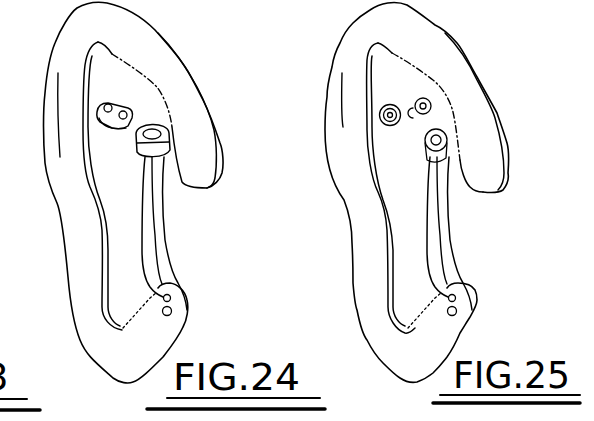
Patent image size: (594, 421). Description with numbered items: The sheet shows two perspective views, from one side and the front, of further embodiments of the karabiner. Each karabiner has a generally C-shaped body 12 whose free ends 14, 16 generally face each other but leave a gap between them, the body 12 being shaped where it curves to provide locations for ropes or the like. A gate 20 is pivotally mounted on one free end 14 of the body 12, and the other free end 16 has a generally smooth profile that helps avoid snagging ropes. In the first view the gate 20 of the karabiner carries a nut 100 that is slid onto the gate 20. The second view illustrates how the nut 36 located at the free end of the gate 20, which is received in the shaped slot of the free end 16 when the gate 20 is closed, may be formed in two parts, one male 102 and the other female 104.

In FIG. 24, the body 12 is at (80, 188).
In FIG. 25, the body 12 is at (372, 192).
In FIG. 24, the free end 14 is at (192, 298).
In FIG. 24, the free end 16 is at (201, 132).
In FIG. 24, the gate 20 is at (170, 238).
In FIG. 25, the gate 20 is at (458, 244).
In FIG. 25, the nut 36 is at (444, 139).
In FIG. 24, the nut 100 is at (120, 107).
In FIG. 25, the male part 102 is at (426, 100).
In FIG. 25, the female part 104 is at (386, 107).